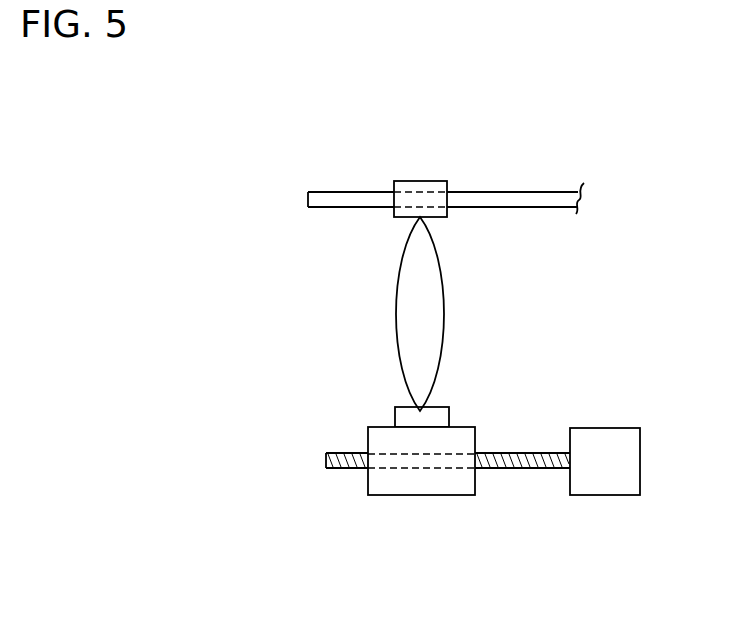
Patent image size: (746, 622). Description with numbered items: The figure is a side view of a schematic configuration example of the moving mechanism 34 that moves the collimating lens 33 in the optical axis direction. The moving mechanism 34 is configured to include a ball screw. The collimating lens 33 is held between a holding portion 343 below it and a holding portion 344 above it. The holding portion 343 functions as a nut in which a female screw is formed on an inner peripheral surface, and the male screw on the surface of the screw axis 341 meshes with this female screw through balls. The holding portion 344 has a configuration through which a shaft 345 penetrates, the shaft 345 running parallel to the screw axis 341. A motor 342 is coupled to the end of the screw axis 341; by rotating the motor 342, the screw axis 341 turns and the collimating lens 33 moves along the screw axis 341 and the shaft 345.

The collimating lens 33 is at (437, 287).
The moving mechanism 34 is at (480, 517).
The screw axis 341 is at (538, 452).
The motor 342 is at (611, 427).
The holding portion 343 is at (471, 426).
The holding portion 344 is at (428, 179).
The shaft 345 is at (535, 190).